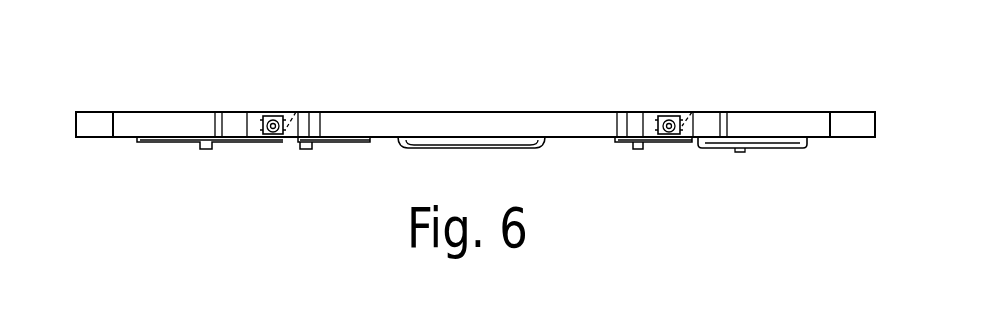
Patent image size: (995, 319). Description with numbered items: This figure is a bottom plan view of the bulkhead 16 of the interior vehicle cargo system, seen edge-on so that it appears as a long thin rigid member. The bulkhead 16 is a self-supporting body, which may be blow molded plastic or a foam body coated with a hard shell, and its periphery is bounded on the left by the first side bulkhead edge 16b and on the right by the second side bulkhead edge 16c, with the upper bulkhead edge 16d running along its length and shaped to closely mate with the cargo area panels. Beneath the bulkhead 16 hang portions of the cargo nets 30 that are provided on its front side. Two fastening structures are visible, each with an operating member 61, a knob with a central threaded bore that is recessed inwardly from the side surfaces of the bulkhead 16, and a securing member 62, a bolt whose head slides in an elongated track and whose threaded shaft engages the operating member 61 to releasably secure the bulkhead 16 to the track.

The bulkhead 16 is at (457, 112).
The first side bulkhead edge 16b is at (76, 125).
The second side bulkhead edge 16c is at (875, 125).
The upper bulkhead edge 16d is at (548, 117).
The cargo net 30 is at (760, 150).
The operating member 61 is at (296, 112).
The securing member 62 is at (260, 112).